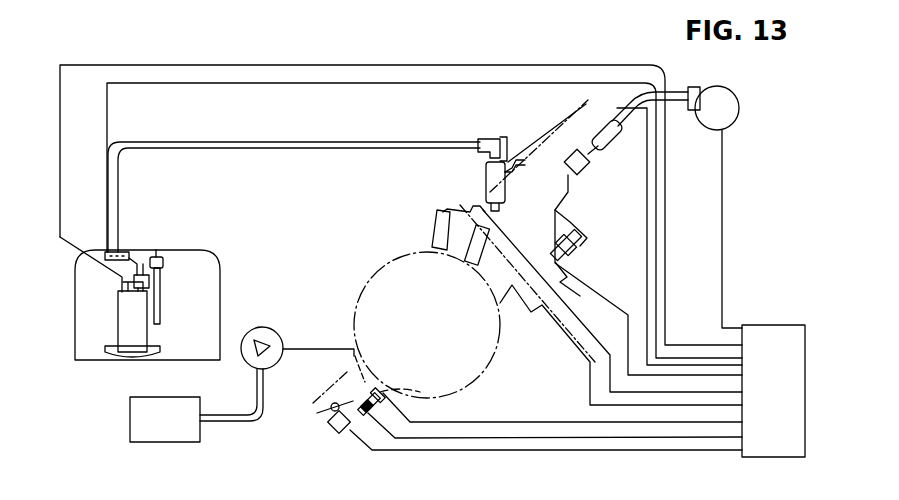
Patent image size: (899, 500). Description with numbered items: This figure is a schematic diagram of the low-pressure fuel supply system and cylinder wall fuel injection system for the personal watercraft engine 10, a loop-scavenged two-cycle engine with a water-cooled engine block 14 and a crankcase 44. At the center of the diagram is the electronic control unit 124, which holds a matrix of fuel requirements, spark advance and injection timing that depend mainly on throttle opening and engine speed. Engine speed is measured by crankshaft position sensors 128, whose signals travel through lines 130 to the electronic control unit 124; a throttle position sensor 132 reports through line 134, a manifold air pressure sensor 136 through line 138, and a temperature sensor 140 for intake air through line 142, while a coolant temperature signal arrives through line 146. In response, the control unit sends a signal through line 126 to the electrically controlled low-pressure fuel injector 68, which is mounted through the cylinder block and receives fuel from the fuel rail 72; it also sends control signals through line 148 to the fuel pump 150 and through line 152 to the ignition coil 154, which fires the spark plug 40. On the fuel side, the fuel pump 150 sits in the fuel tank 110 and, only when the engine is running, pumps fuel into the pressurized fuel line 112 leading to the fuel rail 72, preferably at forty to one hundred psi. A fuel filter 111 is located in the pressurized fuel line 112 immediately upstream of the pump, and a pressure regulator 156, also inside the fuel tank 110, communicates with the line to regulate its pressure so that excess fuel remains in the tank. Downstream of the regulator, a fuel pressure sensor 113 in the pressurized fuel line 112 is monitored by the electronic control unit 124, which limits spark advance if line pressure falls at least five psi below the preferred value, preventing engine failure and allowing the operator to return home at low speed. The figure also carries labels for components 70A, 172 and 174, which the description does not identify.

The engine 10 is at (380, 250).
The engine block 14 is at (572, 212).
The spark plug 40 is at (590, 105).
The crankcase 44 is at (575, 238).
The fuel injector 68 is at (490, 187).
The controller 70A is at (90, 493).
The fuel rail 72 is at (505, 140).
The fuel tank 110 is at (220, 292).
The fuel filter 111 is at (162, 292).
The pressurized fuel line 112 is at (380, 150).
The fuel pressure sensor 113 is at (132, 254).
The electronic control unit 124 is at (782, 440).
The line 126 is at (640, 260).
The crankshaft position sensors 128 is at (445, 256).
The lines 130 is at (600, 318).
The throttle position sensor 132 is at (326, 428).
The line 134 is at (470, 448).
The manifold air pressure sensor 136 is at (368, 395).
The line 138 is at (552, 445).
The temperature sensor 140 is at (385, 390).
The line 142 is at (396, 392).
The line 146 is at (615, 300).
The line 148 is at (666, 268).
The fuel pump 150 is at (118, 328).
The line 152 is at (722, 282).
The ignition coil 154 is at (728, 118).
The pressure regulator 156 is at (160, 262).
The battery 172 is at (138, 499).
The lead 174 is at (258, 493).